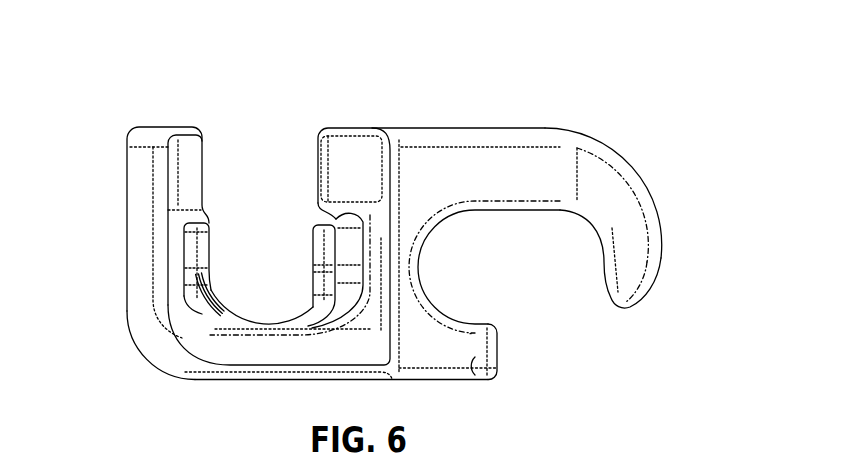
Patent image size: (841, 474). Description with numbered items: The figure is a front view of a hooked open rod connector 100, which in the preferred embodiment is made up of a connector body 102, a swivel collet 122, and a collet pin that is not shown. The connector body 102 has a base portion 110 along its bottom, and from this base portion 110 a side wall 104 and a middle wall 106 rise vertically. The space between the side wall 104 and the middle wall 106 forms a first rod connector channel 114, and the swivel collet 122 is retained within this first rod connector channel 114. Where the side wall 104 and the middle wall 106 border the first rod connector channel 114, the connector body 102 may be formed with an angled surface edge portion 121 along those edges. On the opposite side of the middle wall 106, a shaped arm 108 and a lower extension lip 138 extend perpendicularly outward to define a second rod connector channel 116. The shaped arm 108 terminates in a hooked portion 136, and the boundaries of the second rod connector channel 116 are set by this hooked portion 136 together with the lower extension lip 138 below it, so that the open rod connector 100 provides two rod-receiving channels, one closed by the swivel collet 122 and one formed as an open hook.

The open rod connector 100 is at (108, 80).
The connector body 102 is at (167, 360).
The side wall 104 is at (135, 215).
The middle wall 106 is at (388, 238).
The shaped arm 108 is at (510, 170).
The base portion 110 is at (302, 381).
The first rod connector channel 114 is at (260, 228).
The second rod connector channel 116 is at (547, 288).
The angled surface edge portion 121 is at (345, 290).
The swivel collet 122 is at (192, 291).
The hooked portion 136 is at (655, 243).
The lower extension lip 138 is at (480, 380).